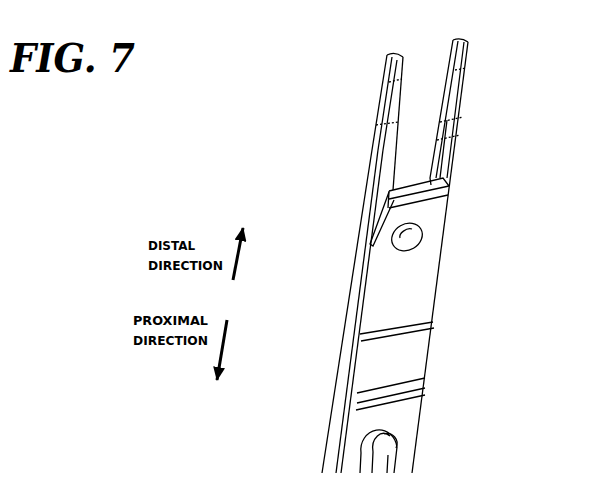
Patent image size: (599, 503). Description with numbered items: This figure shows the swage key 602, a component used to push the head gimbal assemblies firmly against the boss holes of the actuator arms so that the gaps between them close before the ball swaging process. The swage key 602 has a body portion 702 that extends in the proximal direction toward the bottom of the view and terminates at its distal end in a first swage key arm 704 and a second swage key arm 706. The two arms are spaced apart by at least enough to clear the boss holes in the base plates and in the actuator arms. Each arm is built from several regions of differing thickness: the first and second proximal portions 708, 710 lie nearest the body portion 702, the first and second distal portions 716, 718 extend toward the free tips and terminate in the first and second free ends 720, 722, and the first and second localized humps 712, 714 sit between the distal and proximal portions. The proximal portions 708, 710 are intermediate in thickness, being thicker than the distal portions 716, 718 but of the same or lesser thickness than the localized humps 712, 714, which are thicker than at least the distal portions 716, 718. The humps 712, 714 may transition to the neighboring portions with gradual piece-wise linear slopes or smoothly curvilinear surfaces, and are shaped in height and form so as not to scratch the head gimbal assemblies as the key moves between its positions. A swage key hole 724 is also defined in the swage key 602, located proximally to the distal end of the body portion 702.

The swage key 602 is at (471, 318).
The body portion 702 is at (357, 281).
The first swage key arm 704 is at (338, 69).
The second swage key arm 706 is at (517, 54).
The first proximal portion 708 is at (355, 203).
The second proximal portion 710 is at (463, 185).
The first localized hump 712 is at (378, 165).
The second localized hump 714 is at (456, 146).
The first distal portion 716 is at (375, 102).
The second distal portion 718 is at (473, 90).
The first free end 720 is at (391, 54).
The second free end 722 is at (462, 38).
The swage key hole 724 is at (424, 238).